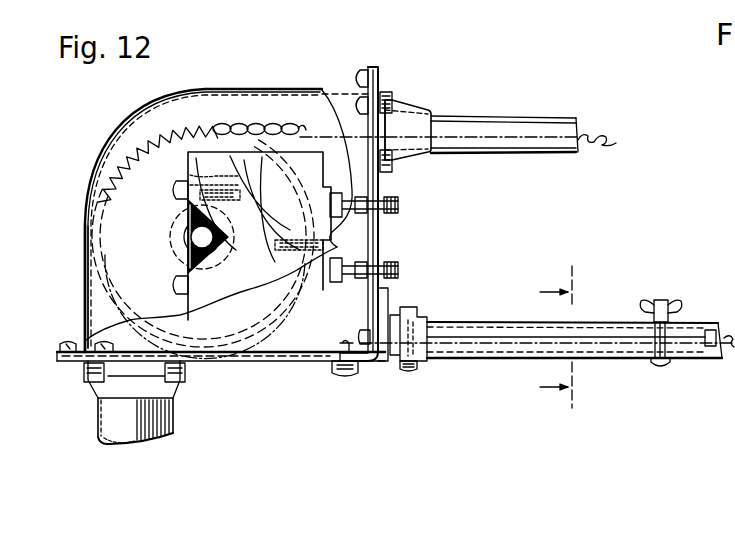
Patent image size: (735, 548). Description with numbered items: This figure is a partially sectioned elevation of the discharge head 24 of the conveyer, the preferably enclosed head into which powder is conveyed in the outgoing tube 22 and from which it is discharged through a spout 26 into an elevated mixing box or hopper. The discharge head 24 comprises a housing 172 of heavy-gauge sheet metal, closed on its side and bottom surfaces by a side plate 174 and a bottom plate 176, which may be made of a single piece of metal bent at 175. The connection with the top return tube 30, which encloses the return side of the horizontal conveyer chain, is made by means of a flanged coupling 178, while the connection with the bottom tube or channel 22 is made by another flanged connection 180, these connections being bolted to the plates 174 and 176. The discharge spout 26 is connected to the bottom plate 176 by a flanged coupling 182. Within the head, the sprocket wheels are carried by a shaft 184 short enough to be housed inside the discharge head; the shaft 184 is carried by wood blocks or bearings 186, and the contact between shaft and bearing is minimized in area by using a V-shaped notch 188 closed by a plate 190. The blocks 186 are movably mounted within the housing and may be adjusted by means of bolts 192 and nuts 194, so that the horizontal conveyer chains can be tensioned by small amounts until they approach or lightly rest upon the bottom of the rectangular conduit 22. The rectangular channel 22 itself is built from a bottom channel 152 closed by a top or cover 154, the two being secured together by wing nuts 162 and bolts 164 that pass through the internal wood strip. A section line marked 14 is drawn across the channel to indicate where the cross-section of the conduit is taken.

The discharge head 24 is at (222, 80).
The housing 172 is at (86, 192).
The bottom plate 176 is at (299, 362).
The side plate 174 is at (380, 250).
The bend 175 is at (371, 365).
The flanged coupling 178 is at (403, 108).
The tube 30 is at (496, 117).
The V-shaped notch 188 is at (220, 205).
The shaft 184 is at (200, 241).
The plate 190 is at (183, 229).
The wood blocks or bearings 186 is at (288, 150).
The nuts 194 is at (358, 200).
The bolts 192 is at (400, 204).
The flanged coupling 182 is at (185, 384).
The spout 26 is at (175, 428).
The flanged connection 180 is at (394, 363).
The outgoing tube 22 is at (478, 303).
The bottom channel 152 is at (522, 361).
The top or cover 154 is at (586, 320).
The wing nuts 162 is at (676, 304).
The bolts 164 is at (666, 366).
The spout 14 is at (541, 295).